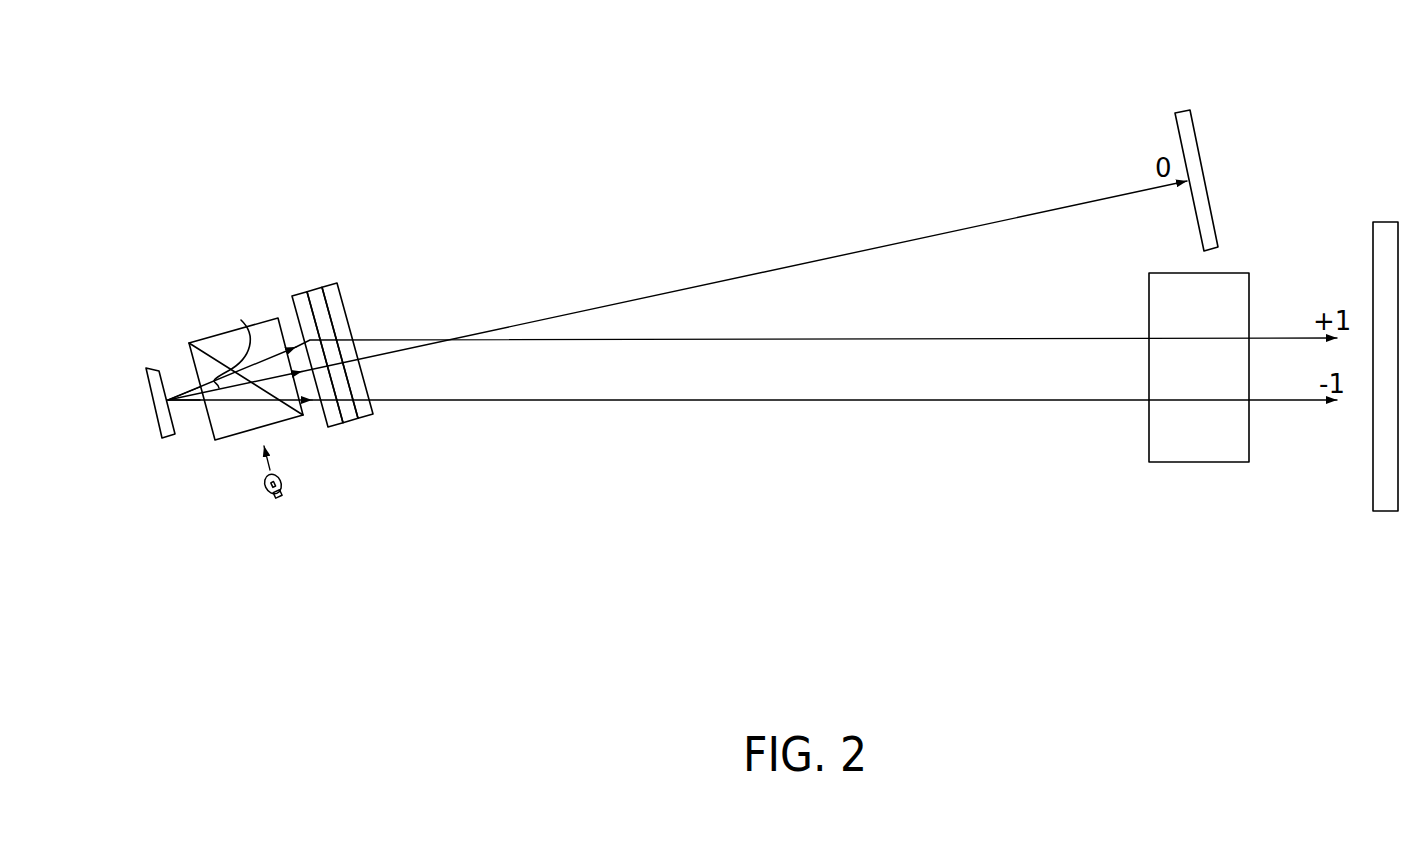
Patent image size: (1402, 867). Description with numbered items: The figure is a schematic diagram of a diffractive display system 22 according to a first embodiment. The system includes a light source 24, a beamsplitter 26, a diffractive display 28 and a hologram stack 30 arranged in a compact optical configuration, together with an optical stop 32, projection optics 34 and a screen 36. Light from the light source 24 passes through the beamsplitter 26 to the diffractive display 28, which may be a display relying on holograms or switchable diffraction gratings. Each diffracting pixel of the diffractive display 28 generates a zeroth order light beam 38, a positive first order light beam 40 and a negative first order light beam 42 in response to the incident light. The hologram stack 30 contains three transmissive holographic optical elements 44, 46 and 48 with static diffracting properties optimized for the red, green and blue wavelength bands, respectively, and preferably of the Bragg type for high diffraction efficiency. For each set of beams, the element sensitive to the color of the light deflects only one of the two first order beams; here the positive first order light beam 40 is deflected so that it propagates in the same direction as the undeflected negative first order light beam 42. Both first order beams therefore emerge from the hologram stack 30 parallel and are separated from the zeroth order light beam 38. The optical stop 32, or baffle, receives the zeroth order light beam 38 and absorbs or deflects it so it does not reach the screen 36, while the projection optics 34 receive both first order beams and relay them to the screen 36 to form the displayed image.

The diffractive display system 22 is at (1302, 72).
The light source 24 is at (282, 500).
The beamsplitter 26 is at (277, 318).
The diffractive display 28 is at (147, 368).
The hologram stack 30 is at (348, 343).
The optical stop 32 is at (1197, 132).
The projection optics 34 is at (1207, 462).
The screen 36 is at (1395, 512).
The zeroth order light beam 38 is at (241, 321).
The first order (+1) light beam 40 is at (194, 399).
The first order (-1) light beam 42 is at (188, 407).
The holographic optical element 44 is at (297, 294).
The holographic optical element 46 is at (315, 288).
The holographic optical element 48 is at (330, 285).